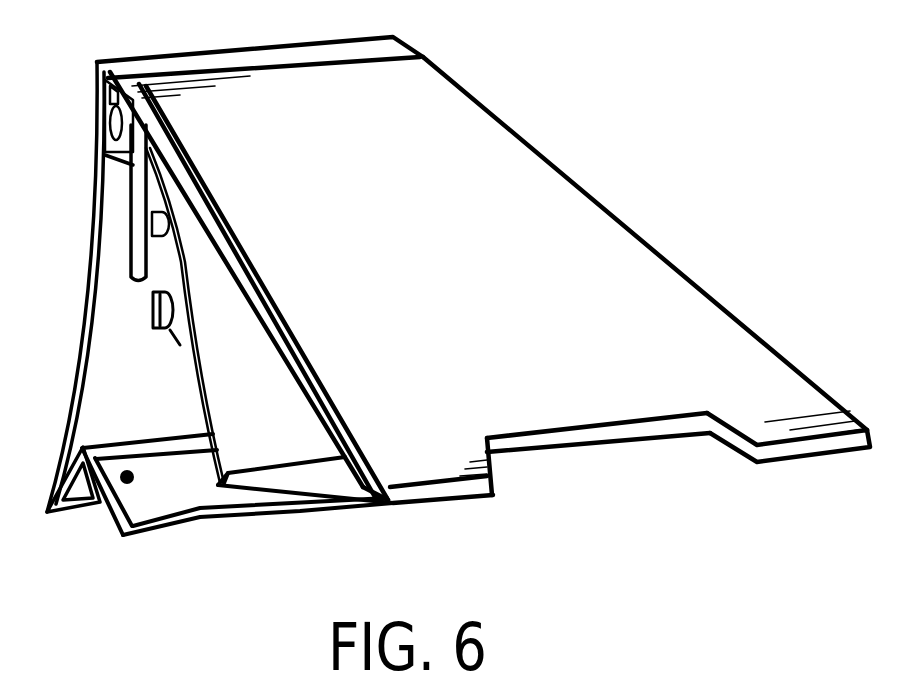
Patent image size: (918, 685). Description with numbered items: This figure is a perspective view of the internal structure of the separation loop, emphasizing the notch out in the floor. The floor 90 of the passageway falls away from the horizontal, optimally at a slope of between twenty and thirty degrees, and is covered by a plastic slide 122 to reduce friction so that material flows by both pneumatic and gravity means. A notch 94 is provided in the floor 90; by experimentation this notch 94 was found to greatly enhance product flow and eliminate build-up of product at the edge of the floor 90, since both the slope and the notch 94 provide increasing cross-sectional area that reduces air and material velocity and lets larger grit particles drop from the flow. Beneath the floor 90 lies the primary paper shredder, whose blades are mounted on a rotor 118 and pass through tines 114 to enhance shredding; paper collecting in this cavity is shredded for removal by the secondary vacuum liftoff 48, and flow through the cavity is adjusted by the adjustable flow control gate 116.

The secondary vacuum liftoff 48 is at (110, 130).
The floor 90 is at (378, 205).
The notch 94 is at (562, 437).
The tines 114 is at (130, 233).
The adjustable flow control gate 116 is at (187, 338).
The rotor 118 is at (153, 322).
The plastic slide 122 is at (553, 193).